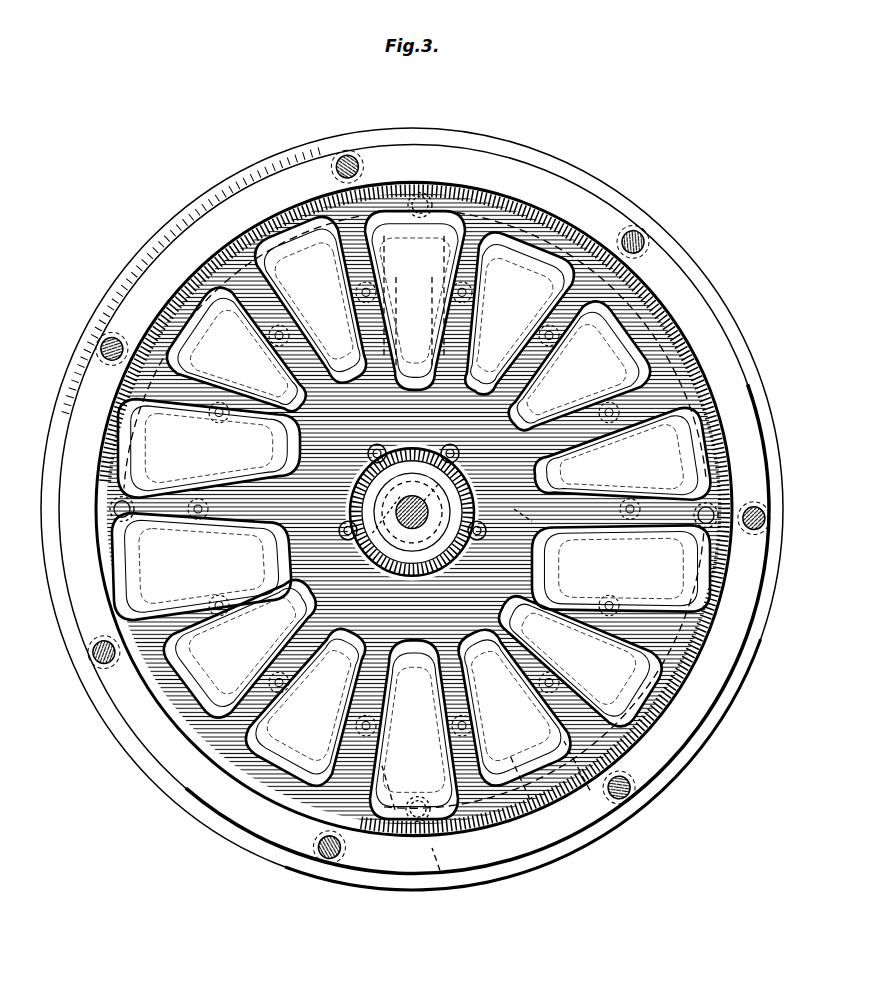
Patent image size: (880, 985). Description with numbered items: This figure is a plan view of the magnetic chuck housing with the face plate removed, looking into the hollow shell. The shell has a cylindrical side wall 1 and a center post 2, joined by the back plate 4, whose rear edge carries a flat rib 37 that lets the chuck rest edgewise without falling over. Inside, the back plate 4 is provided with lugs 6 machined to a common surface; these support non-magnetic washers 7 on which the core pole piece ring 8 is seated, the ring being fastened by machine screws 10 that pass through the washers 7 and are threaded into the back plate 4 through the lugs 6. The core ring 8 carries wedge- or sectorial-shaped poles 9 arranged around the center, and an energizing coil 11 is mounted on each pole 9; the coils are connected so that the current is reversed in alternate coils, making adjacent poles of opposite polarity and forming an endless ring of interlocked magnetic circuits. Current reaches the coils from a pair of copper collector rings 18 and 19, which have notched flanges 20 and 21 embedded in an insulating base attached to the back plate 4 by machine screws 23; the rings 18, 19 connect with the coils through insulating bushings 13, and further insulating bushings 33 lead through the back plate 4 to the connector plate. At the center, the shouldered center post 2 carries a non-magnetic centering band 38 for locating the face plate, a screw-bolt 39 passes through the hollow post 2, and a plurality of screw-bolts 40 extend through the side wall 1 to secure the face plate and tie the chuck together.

The cylindrical side wall 1 is at (412, 509).
The center post 2 is at (412, 528).
The back plate 4 is at (414, 509).
The lugs 6 is at (458, 379).
The non-magnetic washers 7 is at (414, 319).
The core pole piece ring 8 is at (442, 254).
The poles 9 is at (593, 301).
The machine screws 10 is at (443, 619).
The energizing coils 11 is at (635, 511).
The insulating bushings 13 is at (450, 477).
The copper ring 18 is at (601, 806).
The copper ring 19 is at (456, 881).
The flange 20 is at (547, 829).
The flange 21 is at (376, 848).
The machine screws 23 is at (412, 516).
The insulating bushings 33 is at (417, 492).
The flat rib 37 is at (414, 500).
The centering band 38 is at (426, 521).
The screw-bolt 39 is at (411, 541).
The screw-bolts 40 is at (414, 485).